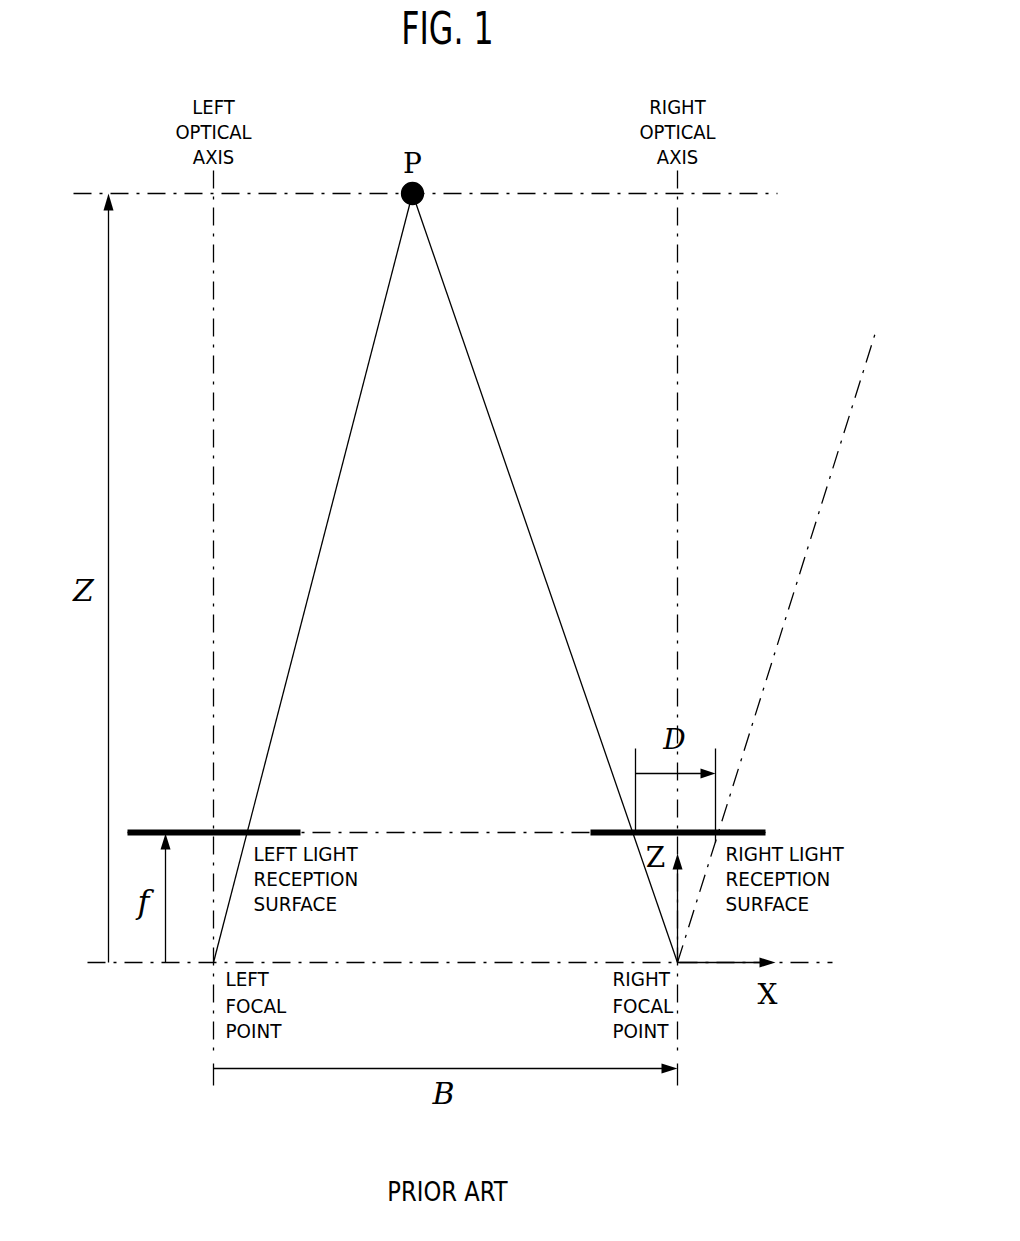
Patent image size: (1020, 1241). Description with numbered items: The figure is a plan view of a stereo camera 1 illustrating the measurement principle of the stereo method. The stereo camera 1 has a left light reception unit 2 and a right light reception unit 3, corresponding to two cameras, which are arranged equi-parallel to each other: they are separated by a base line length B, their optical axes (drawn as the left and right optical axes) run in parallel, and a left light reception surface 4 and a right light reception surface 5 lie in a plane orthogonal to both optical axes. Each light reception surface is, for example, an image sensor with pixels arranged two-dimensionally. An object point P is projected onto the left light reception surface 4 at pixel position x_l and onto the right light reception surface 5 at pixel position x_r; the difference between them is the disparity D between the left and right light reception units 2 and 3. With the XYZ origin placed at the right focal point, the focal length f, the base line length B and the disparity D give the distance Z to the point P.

The stereo camera 1 is at (387, 663).
The left light reception unit 2 is at (302, 772).
The right light reception unit 3 is at (570, 770).
The left light reception surface 4 is at (188, 832).
The right light reception surface 5 is at (750, 832).